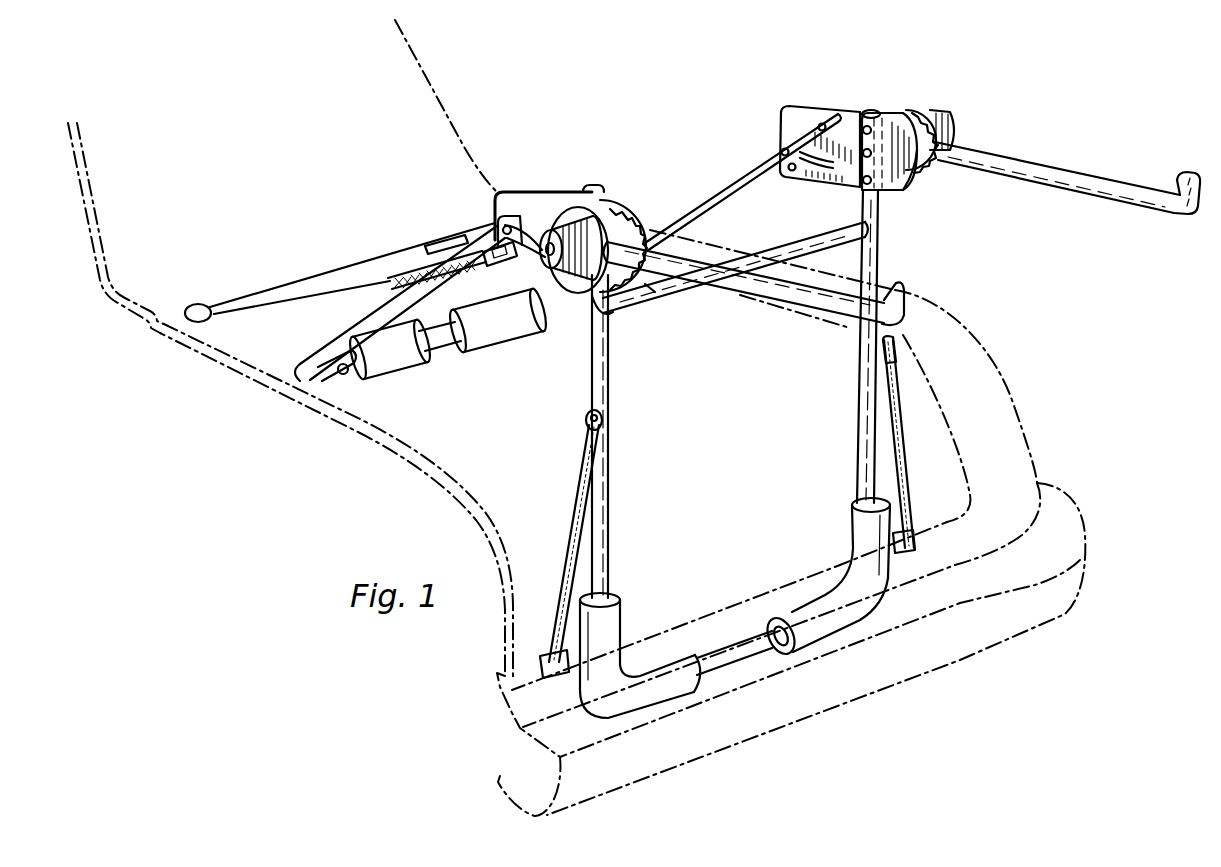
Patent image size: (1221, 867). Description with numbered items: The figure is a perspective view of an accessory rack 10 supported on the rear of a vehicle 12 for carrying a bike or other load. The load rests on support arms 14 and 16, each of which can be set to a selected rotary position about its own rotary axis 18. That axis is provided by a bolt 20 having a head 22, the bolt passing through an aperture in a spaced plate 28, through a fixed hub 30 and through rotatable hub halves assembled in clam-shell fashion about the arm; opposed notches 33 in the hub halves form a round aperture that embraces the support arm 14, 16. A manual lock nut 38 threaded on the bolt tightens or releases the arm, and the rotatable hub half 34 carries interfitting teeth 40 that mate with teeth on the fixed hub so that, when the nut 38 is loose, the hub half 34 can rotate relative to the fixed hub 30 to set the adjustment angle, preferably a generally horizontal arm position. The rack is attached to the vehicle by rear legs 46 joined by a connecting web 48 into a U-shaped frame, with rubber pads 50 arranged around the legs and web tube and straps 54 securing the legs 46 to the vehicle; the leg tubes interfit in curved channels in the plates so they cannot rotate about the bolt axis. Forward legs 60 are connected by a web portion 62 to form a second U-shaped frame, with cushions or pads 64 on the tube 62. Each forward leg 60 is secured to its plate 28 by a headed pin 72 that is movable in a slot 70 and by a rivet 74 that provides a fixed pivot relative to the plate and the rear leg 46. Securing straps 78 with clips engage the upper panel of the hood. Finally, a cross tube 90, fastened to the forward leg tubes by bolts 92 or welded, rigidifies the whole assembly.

The accessory rack 10 is at (1010, 42).
The vehicle 12 is at (450, 431).
The support arm 14 is at (1105, 188).
The support arm 16 is at (806, 294).
The rotary axis 18 is at (508, 266).
The bolt 20 is at (862, 183).
The bolt head 22 is at (843, 175).
The spaced plate 28 is at (590, 190).
The fixed hub 30 is at (918, 182).
The opposed notch 33 is at (648, 280).
The rotatable hub half 34 is at (926, 110).
The manual lock nut 38 is at (960, 112).
The interfitting teeth 40 is at (640, 208).
The rear leg 46 is at (610, 392).
The connecting web 48 is at (786, 652).
The rubber bumper or pad 50 is at (770, 625).
The strap 54 is at (573, 522).
The forward leg 60 is at (748, 172).
The web portion 62 is at (452, 345).
The cushion or pad 64 is at (398, 358).
The slot 70 is at (532, 193).
The headed pin 72 is at (497, 218).
The rivet 74 is at (546, 200).
The securing strap 78 is at (368, 280).
The cross tube 90 is at (782, 246).
The bolt 92 is at (607, 314).